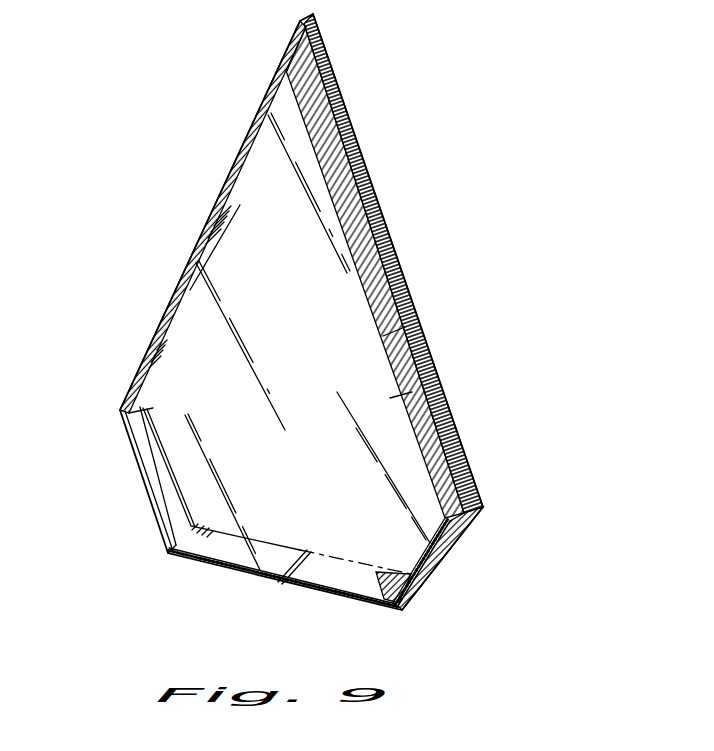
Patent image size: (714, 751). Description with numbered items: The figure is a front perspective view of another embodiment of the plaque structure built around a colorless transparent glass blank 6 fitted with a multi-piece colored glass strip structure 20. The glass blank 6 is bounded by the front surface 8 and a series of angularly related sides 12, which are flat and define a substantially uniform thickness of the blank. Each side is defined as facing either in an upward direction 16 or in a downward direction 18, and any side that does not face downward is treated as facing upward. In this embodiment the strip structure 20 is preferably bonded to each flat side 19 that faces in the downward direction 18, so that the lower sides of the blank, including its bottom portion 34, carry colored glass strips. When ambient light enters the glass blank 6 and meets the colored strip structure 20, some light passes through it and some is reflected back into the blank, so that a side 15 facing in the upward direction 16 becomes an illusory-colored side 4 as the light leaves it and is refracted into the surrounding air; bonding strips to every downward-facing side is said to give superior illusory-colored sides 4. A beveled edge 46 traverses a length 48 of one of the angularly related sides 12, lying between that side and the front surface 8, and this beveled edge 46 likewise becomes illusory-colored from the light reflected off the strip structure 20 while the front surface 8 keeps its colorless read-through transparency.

The illusory-colored sides 4 is at (323, 44).
The colorless transparent glass blank 6 is at (200, 363).
The front surface 8 is at (277, 352).
The angularly related sides 12 is at (405, 270).
The side facing in an upward direction 15 is at (367, 161).
The upward direction 16 is at (383, 218).
The downward direction 18 is at (447, 582).
The flat side 19 is at (165, 555).
The colored glass strip structure 20 is at (455, 560).
The bottom portion 34 is at (310, 568).
The beveled edge 46 is at (412, 392).
The length 48 is at (407, 330).